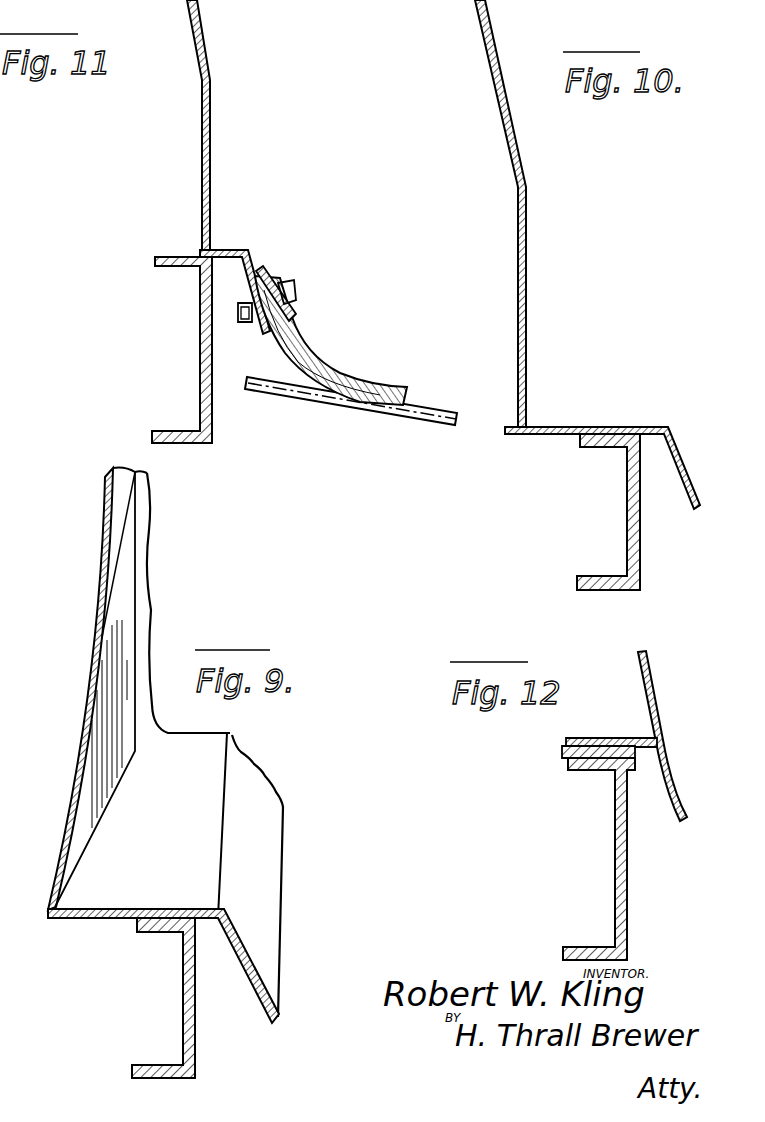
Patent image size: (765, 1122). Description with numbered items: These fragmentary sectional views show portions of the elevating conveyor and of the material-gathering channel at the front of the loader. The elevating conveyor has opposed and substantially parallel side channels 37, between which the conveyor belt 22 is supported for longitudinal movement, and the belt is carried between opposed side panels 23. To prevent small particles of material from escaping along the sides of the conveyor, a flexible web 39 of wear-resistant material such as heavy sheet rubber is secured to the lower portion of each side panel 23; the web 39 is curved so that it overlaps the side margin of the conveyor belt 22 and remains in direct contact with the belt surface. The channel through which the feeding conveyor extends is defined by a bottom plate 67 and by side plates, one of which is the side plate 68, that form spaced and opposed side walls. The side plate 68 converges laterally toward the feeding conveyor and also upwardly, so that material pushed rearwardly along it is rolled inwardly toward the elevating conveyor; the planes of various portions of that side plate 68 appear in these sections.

In FIG. 11, the conveyor belt 22 is at (430, 427).
In FIG. 11, the side panel 23 is at (202, 143).
In FIG. 12, the side panel 23 is at (653, 693).
In FIG. 11, the side channel 37 is at (202, 315).
In FIG. 10, the side channel 37 is at (640, 495).
In FIG. 9, the side channel 37 is at (183, 967).
In FIG. 12, the side channel 37 is at (627, 855).
In FIG. 11, the flexible web 39 is at (300, 353).
In FIG. 11, the bottom plate 67 is at (228, 254).
In FIG. 10, the bottom plate 67 is at (562, 434).
In FIG. 9, the bottom plate 67 is at (113, 903).
In FIG. 10, the side plate 68 is at (518, 250).
In FIG. 9, the side plate 68 is at (97, 648).